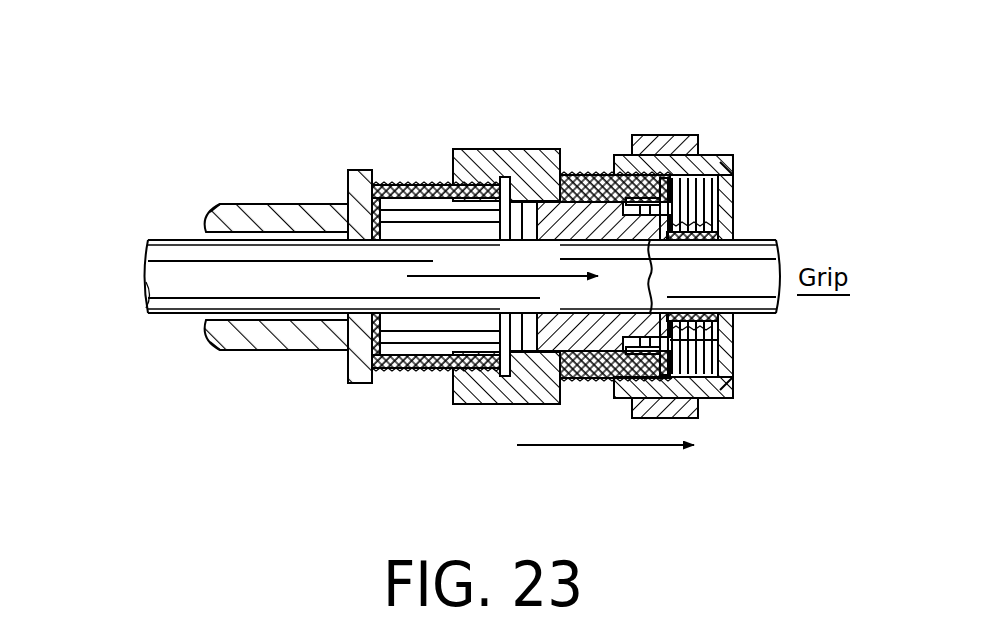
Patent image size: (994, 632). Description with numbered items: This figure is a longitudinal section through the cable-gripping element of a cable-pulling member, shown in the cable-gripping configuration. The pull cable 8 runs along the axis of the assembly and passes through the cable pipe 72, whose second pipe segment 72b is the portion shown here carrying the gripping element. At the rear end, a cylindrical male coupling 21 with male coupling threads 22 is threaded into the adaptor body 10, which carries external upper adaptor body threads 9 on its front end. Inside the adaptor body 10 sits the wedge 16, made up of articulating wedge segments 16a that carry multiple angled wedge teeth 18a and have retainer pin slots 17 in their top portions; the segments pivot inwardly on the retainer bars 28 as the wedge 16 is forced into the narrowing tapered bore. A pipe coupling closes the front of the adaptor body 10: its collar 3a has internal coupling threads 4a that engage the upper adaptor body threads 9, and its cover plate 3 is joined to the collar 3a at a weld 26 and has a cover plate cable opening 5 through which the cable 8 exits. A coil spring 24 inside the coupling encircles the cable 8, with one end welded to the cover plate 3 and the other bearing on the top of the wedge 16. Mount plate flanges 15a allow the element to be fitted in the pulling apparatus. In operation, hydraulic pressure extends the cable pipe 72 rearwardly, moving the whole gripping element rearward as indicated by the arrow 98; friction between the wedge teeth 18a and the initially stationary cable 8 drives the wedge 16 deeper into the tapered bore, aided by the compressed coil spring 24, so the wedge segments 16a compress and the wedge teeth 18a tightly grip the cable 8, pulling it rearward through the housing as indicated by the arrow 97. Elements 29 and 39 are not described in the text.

The cable 8 is at (172, 253).
The second pipe segment 72b is at (267, 215).
The cable pipe 72 is at (253, 354).
The male coupling threads 22 is at (382, 374).
The male coupling 21 is at (411, 179).
The upper adaptor body threads 9 is at (370, 168).
The adaptor body 10 is at (470, 147).
The wedge 16 is at (584, 178).
The wedge segments 16a is at (560, 240).
The retainer pin slots 17 is at (662, 198).
The spring 29 is at (735, 196).
The coil spring 24 is at (735, 226).
The spring seat 39 is at (672, 176).
The cover plate 3 is at (735, 210).
The collar 3a is at (708, 170).
The weld 26 is at (735, 172).
The internal coupling threads 4a is at (735, 177).
The retainer bars 28 is at (735, 346).
The mount plate flanges 15a is at (696, 410).
The wedge teeth 18a is at (650, 283).
The cover plate cable opening 5 is at (762, 330).
The arrow 97 is at (430, 277).
The arrow 98 is at (573, 445).